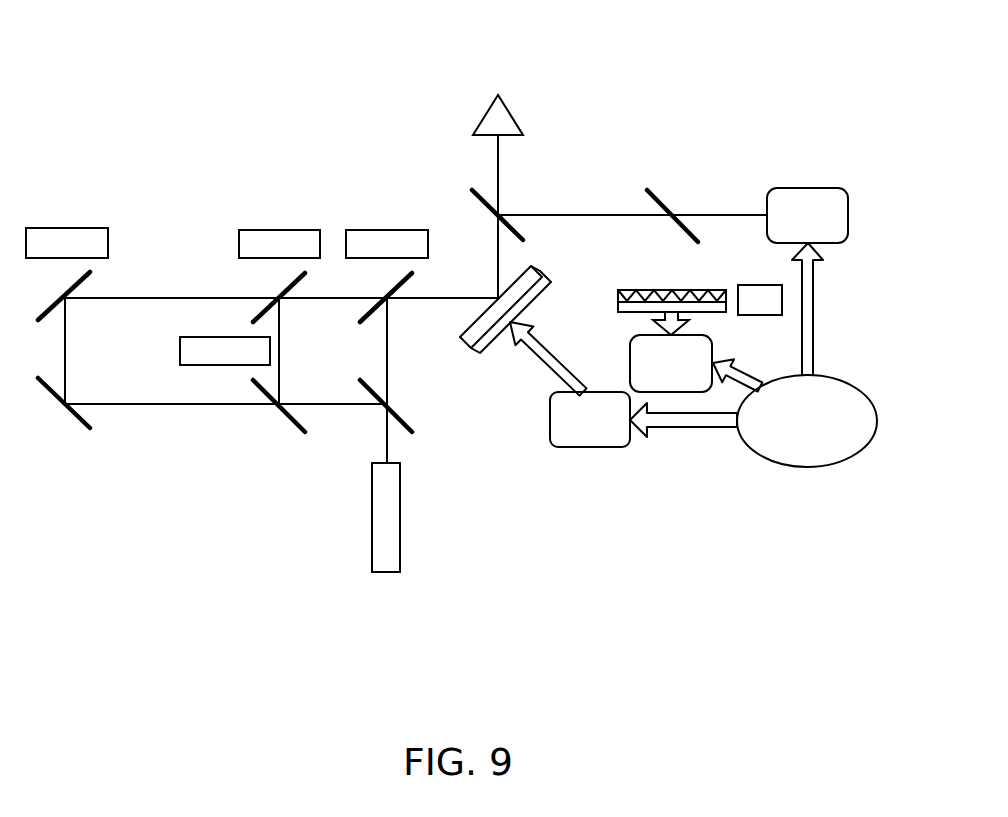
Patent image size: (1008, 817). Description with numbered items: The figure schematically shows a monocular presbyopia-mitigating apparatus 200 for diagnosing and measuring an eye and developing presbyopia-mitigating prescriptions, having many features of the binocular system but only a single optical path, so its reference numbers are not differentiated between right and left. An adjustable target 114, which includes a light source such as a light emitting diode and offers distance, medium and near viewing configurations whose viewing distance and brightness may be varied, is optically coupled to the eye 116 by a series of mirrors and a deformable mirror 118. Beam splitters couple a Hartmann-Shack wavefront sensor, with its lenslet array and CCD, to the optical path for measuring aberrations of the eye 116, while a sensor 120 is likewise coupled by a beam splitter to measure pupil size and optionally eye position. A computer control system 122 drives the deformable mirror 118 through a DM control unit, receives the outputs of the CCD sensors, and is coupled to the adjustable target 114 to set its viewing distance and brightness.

The presbyopia-mitigating apparatus 200 is at (747, 63).
The adjustable target 114 is at (413, 582).
The eye 116 is at (508, 113).
The deformable mirror 118 is at (538, 267).
The sensor 120 is at (848, 215).
The computer control system 122 is at (803, 467).